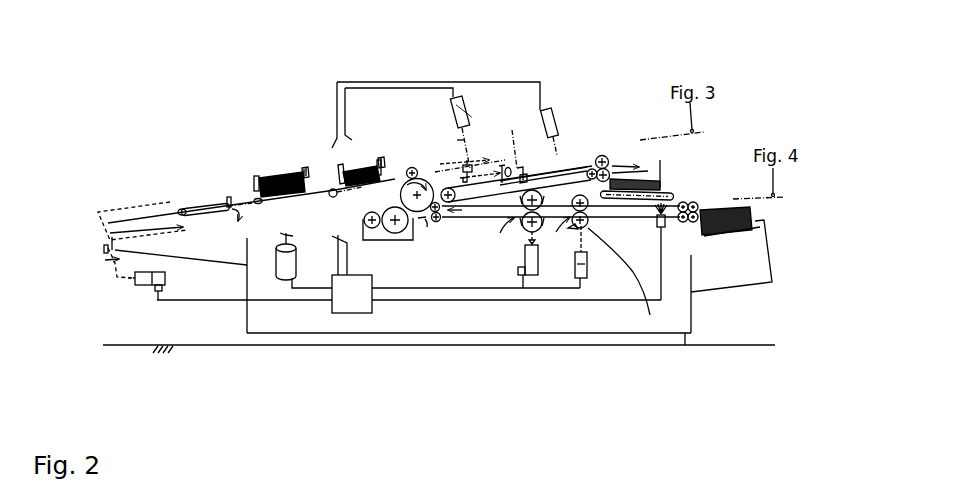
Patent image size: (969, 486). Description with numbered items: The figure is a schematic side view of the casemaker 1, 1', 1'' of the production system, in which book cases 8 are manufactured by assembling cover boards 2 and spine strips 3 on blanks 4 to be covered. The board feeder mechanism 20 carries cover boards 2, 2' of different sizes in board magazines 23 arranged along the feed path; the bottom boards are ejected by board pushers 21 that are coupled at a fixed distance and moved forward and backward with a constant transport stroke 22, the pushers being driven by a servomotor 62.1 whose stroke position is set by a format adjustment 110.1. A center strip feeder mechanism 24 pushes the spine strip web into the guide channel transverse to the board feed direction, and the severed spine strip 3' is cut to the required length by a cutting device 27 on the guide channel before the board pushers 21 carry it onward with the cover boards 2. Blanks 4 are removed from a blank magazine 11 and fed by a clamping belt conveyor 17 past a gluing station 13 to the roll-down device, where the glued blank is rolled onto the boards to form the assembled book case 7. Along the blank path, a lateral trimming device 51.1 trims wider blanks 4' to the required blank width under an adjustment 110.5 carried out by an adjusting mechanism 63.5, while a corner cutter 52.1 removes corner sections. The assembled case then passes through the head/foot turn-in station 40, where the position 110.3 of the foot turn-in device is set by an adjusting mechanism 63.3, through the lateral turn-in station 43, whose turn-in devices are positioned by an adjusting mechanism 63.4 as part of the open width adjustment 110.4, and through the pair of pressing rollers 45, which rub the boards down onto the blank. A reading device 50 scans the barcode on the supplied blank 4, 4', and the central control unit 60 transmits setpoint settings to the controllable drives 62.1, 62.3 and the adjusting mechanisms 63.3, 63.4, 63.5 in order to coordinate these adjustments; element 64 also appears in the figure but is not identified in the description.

The casemaker 1 is at (793, 47).
The casemaker 1' is at (812, 32).
The casemaker 1'' is at (833, 32).
The cover board 2 is at (289, 108).
The cover board 2' is at (379, 103).
The spine strip 3 is at (212, 117).
The spine strip 3' is at (251, 129).
The blank to be covered 4 is at (632, 320).
The blank to be covered 4' is at (830, 303).
The assembled book case 7 is at (422, 172).
The book case 8 is at (650, 178).
The blank magazine 11 is at (722, 184).
The gluing station 13 is at (422, 258).
The clamping belt conveyor 17 is at (661, 228).
The board feeder mechanism 20 is at (211, 256).
The board pusher 21 is at (330, 189).
The transport stroke 22 is at (124, 238).
The board magazine 23 is at (271, 157).
The center strip feeder mechanism 24 is at (129, 234).
The cutting device 27 is at (219, 192).
The head/foot turn-in station 40 is at (519, 140).
The lateral turn-in station 43 is at (594, 146).
The pair of pressing rollers 45 is at (625, 148).
The reading device 50 is at (684, 262).
The roller 51.1 is at (566, 240).
The roller 52.1 is at (505, 238).
The control unit 60 is at (354, 303).
The servomotor 62.1 is at (148, 283).
The controllable drive 62.3 is at (533, 265).
The adjusting mechanism 63.3 is at (457, 97).
The adjusting mechanism 63.4 is at (550, 108).
The adjusting mechanism 63.5 is at (584, 240).
The reservoir 64 is at (291, 268).
The format adjustment 110.1 is at (107, 247).
The foot turn-in device position 110.3 is at (467, 141).
The open width adjustment 110.4 is at (561, 157).
The blank width adjustment 110.5 is at (631, 237).